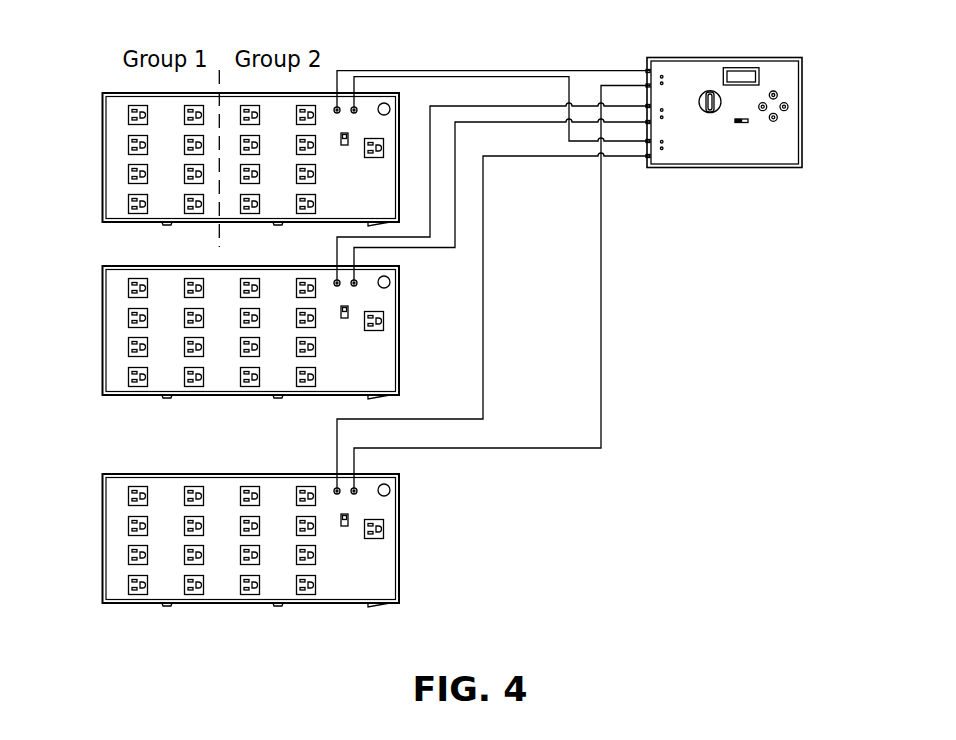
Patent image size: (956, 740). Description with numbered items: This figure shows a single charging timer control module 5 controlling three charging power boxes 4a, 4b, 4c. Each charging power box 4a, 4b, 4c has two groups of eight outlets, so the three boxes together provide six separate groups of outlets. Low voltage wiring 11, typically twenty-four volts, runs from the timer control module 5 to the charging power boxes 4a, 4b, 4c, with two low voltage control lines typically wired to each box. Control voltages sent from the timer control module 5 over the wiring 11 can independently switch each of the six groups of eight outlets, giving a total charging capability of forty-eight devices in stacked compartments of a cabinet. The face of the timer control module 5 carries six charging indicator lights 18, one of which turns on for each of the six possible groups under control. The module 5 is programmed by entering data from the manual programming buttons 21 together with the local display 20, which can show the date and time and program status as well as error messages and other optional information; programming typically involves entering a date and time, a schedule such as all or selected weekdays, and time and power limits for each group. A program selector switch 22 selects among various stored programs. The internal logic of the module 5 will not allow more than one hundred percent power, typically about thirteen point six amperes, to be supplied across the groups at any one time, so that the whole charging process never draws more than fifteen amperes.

The charging power box 4a is at (115, 120).
The charging power box 4b is at (117, 325).
The charging power box 4c is at (115, 541).
The charging timer control module 5 is at (727, 153).
The low voltage wiring 11 is at (506, 168).
The charging indicator lights 18 is at (667, 117).
The display screen 20 is at (748, 74).
The manual programming buttons 21 is at (788, 106).
The program selector switch 22 is at (743, 123).